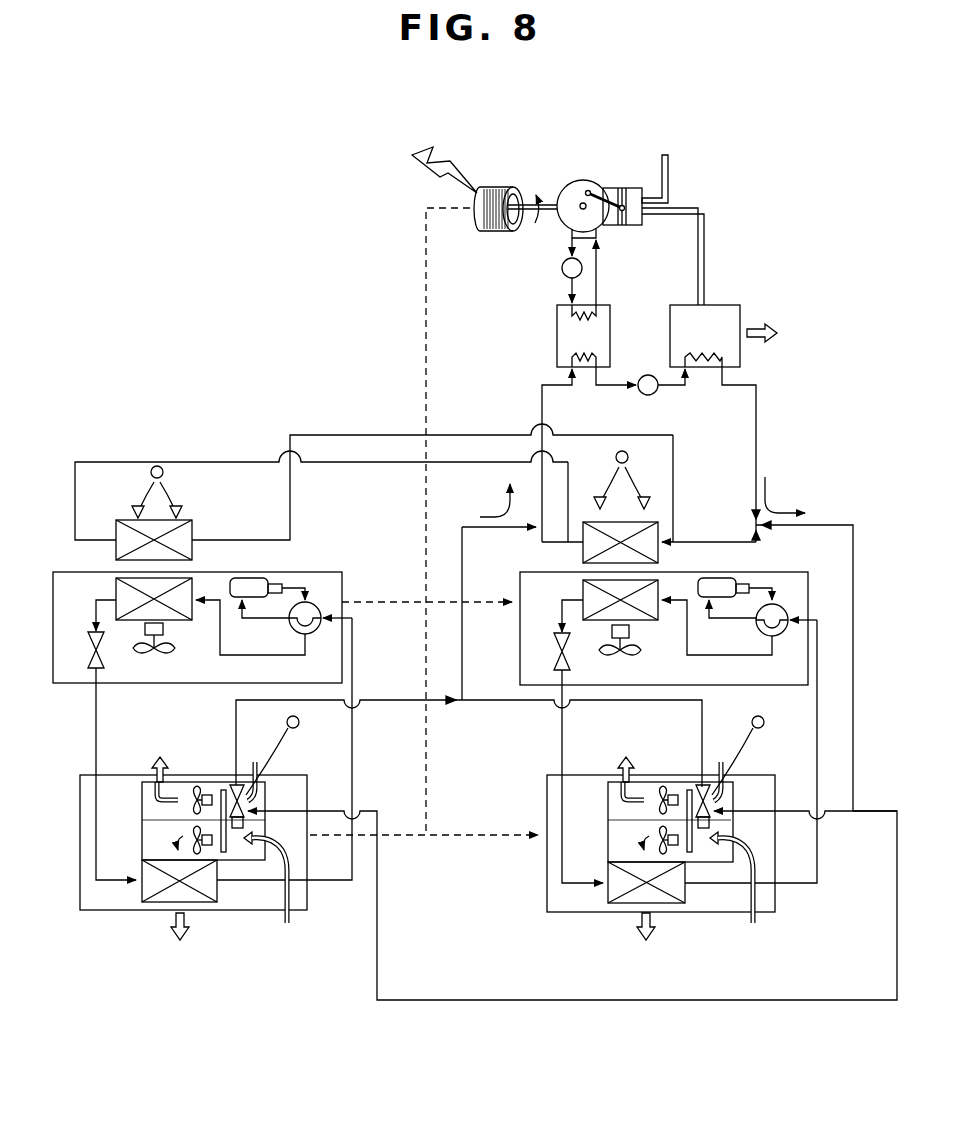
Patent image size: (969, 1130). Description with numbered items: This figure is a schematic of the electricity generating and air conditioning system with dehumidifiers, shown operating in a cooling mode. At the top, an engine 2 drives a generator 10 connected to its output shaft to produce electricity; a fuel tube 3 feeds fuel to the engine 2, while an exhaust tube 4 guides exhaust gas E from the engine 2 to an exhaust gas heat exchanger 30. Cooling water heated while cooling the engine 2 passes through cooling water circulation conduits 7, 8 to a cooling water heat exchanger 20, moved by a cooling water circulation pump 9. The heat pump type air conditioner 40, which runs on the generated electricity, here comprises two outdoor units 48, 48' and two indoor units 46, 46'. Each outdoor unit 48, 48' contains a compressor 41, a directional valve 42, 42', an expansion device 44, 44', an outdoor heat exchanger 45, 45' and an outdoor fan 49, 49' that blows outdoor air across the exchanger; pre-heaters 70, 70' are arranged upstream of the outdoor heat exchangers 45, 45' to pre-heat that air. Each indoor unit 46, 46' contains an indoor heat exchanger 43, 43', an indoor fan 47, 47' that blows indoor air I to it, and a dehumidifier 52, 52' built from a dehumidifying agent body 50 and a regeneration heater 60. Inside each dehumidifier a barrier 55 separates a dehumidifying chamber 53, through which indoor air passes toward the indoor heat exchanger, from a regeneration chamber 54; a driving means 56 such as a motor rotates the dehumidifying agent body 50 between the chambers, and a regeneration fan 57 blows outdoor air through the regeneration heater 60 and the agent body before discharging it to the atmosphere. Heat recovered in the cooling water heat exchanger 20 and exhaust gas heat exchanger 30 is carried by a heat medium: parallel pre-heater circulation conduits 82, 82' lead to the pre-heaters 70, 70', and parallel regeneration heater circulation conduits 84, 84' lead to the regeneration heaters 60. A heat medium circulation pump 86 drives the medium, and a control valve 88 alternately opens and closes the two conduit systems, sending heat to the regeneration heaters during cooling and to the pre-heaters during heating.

The engine 2 is at (583, 180).
The fuel tube 3 is at (669, 178).
The exhaust tube 4 is at (705, 232).
The cooling water circulation conduit 7 is at (572, 243).
The cooling water circulation conduit 8 is at (597, 275).
The cooling water circulation pump 9 is at (562, 270).
The generator 10 is at (497, 185).
The cooling water heat exchanger 20 is at (557, 340).
The exhaust gas heat exchanger 30 is at (740, 353).
The heat pump type air conditioner 40 is at (832, 902).
The compressor 41 is at (250, 585).
The directional valve 42 is at (780, 741).
The directional valve 42' is at (298, 740).
The indoor heat exchanger 43 is at (646, 923).
The indoor heat exchanger 43' is at (179, 927).
The expansion device 44 is at (539, 741).
The expansion device 44' is at (77, 740).
The outdoor heat exchanger 45 is at (567, 613).
The outdoor heat exchanger 45' is at (105, 599).
The indoor unit 46 is at (625, 848).
The indoor unit 46' is at (171, 845).
The indoor fan 47 is at (616, 849).
The indoor fan 47' is at (146, 851).
The outdoor unit 48 is at (718, 628).
The outdoor unit 48' is at (233, 618).
The outdoor fan 49 is at (571, 682).
The outdoor fan 49' is at (104, 691).
The dehumidifying agent body 50 is at (222, 790).
The dehumidifier 52 is at (746, 822).
The dehumidifier 52' is at (280, 830).
The dehumidifying chamber 53 is at (250, 848).
The regeneration chamber 54 is at (203, 793).
The barrier 55 is at (163, 822).
The driving means 56 is at (240, 828).
The regeneration fan 57 is at (195, 812).
The regeneration heater 60 is at (239, 785).
The pre-heater 70 is at (614, 501).
The pre-heater 70' is at (139, 513).
The pre-heater circulation conduit 82 is at (618, 505).
The pre-heater circulation conduit 82' is at (374, 452).
The regeneration heater circulation conduit 84 is at (583, 796).
The regeneration heater circulation conduit 84' is at (349, 742).
The heat medium circulation pump 86 is at (660, 392).
The control valve 88 is at (753, 525).
The exhaust gas E is at (760, 315).
The indoor air I is at (287, 923).